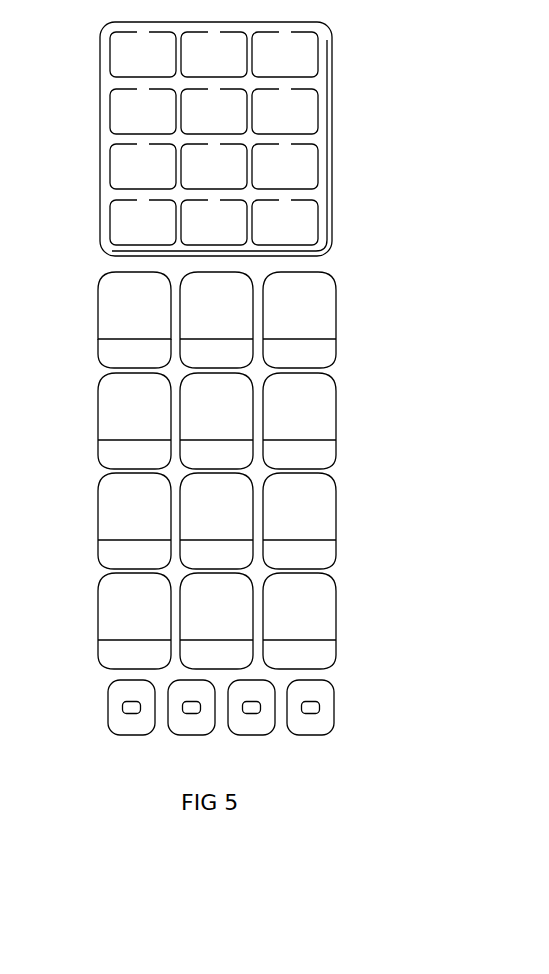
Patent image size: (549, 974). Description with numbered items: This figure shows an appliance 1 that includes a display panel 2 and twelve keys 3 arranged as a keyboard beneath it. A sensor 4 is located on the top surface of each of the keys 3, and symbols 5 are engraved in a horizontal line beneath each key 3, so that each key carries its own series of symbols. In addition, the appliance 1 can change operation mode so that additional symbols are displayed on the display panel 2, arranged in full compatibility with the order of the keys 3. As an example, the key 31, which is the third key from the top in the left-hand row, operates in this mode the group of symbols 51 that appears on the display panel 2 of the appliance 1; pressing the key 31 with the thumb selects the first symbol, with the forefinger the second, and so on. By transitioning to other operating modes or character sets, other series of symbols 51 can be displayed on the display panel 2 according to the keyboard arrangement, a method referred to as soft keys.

The appliance 1 is at (226, 487).
The display panel 2 is at (216, 139).
The keys 3 is at (105, 303).
The sensor 4 is at (120, 330).
The symbols 5 is at (100, 350).
The key 31 is at (120, 515).
The group of symbols 51 is at (112, 158).